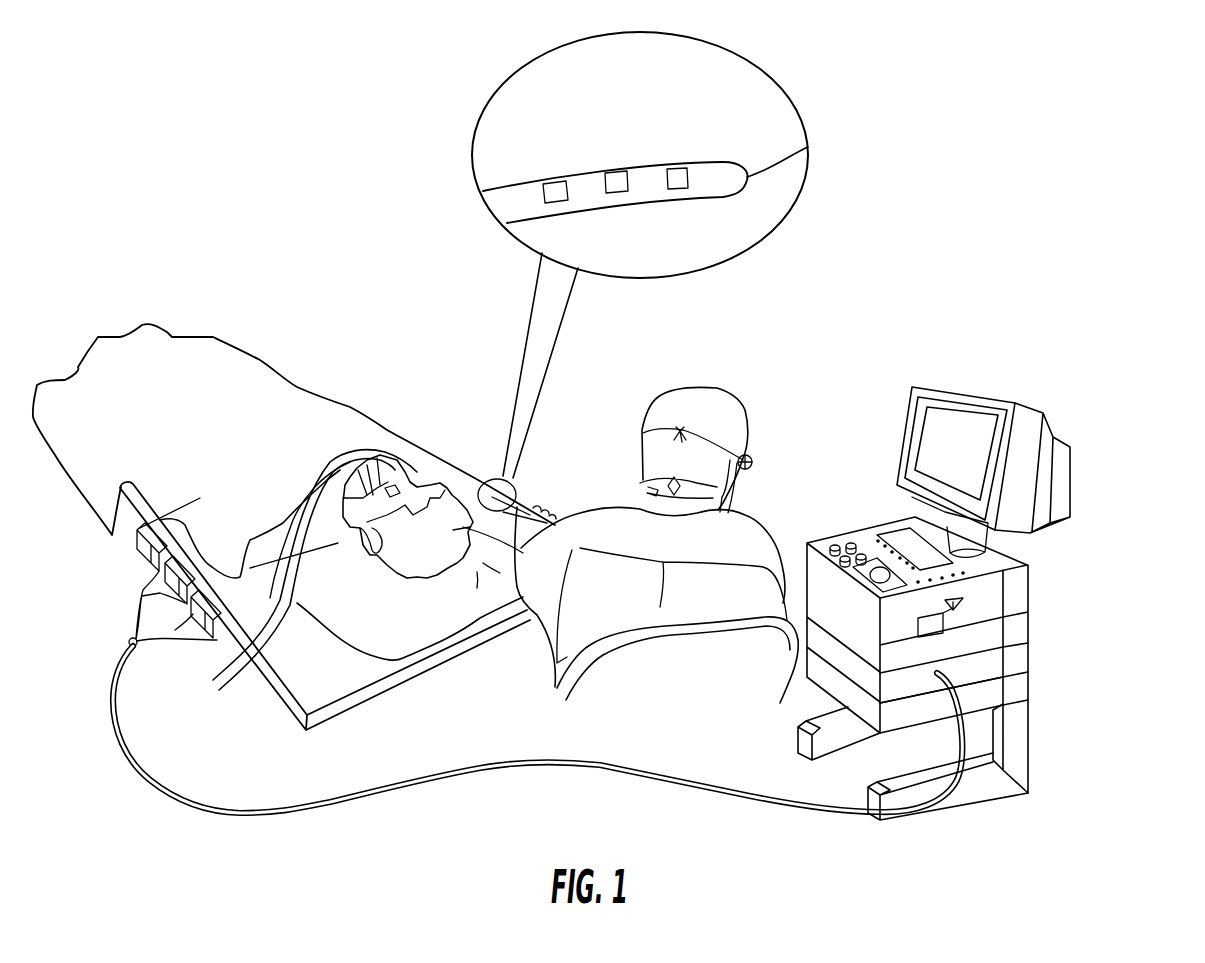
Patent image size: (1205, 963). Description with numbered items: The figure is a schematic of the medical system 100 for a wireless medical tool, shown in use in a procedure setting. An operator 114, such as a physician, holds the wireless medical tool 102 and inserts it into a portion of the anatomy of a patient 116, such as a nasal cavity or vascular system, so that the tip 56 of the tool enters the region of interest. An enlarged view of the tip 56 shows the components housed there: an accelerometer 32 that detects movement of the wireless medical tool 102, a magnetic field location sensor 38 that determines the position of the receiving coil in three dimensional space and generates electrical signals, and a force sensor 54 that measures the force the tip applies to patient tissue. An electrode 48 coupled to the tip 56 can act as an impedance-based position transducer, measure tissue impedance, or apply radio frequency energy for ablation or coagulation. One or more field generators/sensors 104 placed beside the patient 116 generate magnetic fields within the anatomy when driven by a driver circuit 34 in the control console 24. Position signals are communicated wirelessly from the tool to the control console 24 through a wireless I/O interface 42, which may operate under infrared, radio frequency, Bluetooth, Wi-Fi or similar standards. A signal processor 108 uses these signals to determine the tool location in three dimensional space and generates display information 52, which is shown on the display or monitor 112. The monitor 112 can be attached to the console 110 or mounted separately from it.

The medical system 100 is at (872, 308).
The control console 24 is at (977, 577).
The accelerometer 32 is at (556, 178).
The magnetic field location sensor 38 is at (613, 170).
The force sensor 54 is at (676, 166).
The tip 56 is at (698, 161).
The electrode 48 is at (808, 147).
The display information 52 is at (949, 422).
The display or monitor 112 is at (1022, 412).
The driver circuit 34 is at (993, 592).
The wireless input/output (I/O) interface 42 is at (933, 630).
The signal processor 108 is at (993, 662).
The console 110 is at (993, 688).
The wireless medical tool 102 is at (515, 503).
The operator 114 is at (758, 527).
The field generator/sensor 104 is at (150, 556).
The patient 116 is at (403, 555).